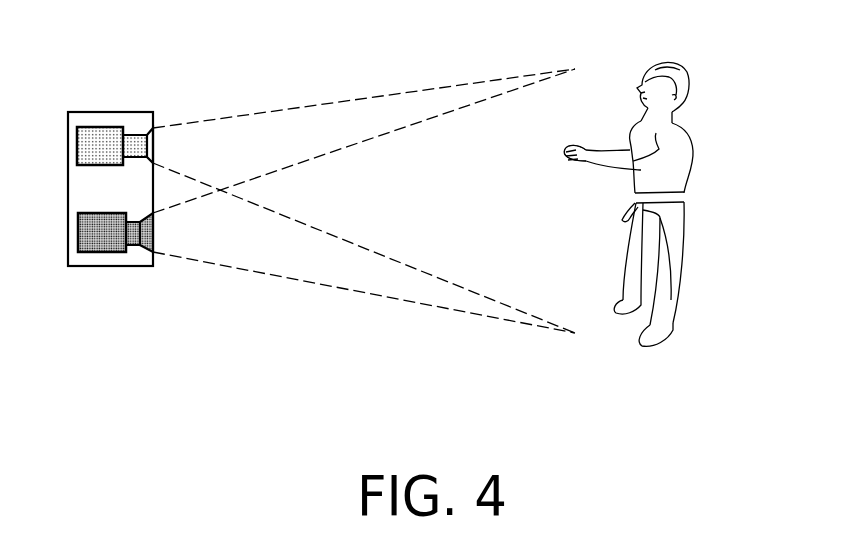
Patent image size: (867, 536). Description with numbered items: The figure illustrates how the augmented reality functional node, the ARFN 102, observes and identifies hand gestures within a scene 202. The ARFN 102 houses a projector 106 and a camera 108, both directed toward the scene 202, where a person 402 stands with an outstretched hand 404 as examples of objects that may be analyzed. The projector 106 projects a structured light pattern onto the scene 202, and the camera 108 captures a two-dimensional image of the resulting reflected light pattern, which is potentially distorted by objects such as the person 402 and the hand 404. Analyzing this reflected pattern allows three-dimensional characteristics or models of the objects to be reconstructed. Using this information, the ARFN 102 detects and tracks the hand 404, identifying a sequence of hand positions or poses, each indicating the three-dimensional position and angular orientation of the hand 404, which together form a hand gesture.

The ARFN 102 is at (92, 250).
The projector 106 is at (100, 145).
The camera 108 is at (118, 250).
The scene 202 is at (517, 38).
The person 402 is at (675, 127).
The hand 404 is at (563, 150).